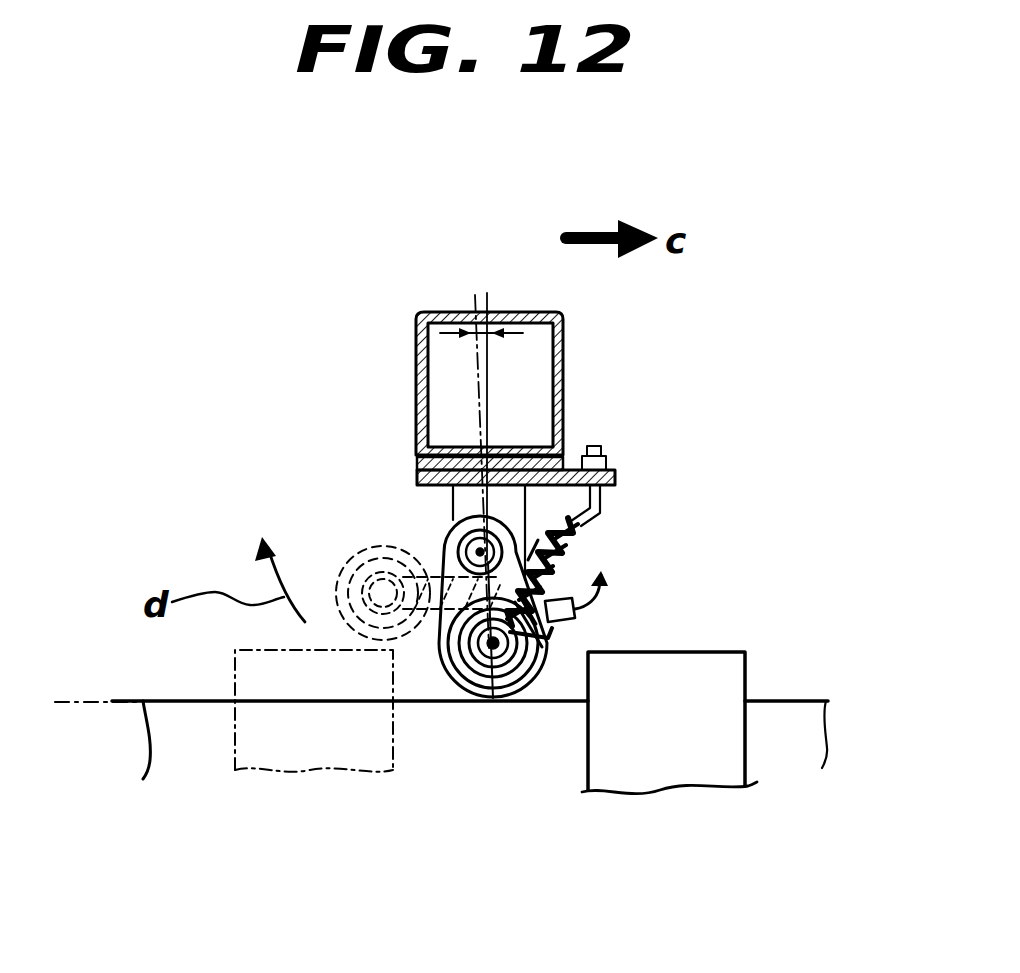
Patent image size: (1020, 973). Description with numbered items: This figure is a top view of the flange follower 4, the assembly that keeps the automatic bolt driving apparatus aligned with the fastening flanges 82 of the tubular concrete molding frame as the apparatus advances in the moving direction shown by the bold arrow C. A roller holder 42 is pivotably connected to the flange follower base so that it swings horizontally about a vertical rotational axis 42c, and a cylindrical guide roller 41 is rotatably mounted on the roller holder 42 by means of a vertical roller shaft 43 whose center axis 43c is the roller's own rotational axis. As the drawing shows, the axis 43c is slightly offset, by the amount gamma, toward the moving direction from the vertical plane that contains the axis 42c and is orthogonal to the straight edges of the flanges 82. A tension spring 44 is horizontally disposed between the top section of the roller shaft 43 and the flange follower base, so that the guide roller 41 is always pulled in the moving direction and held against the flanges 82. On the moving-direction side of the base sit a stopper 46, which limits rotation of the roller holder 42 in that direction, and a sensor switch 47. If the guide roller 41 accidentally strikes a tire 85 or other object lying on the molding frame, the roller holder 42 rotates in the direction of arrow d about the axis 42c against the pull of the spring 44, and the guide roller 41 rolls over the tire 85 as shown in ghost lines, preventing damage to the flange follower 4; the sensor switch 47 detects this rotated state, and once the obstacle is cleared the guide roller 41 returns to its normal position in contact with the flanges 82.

The flange follower 4 is at (664, 455).
The guide roller 41 is at (493, 645).
The roller holder 42 is at (445, 662).
The rotational axis of the roller holder 42c is at (460, 538).
The roller shaft 43 is at (491, 702).
The rotational axis of the guide roller 43c is at (488, 655).
The tension spring 44 is at (580, 549).
The stopper 46 is at (599, 452).
The sensor switch 47 is at (576, 637).
The fastening flange 82 is at (543, 703).
The tire 85 is at (288, 737).